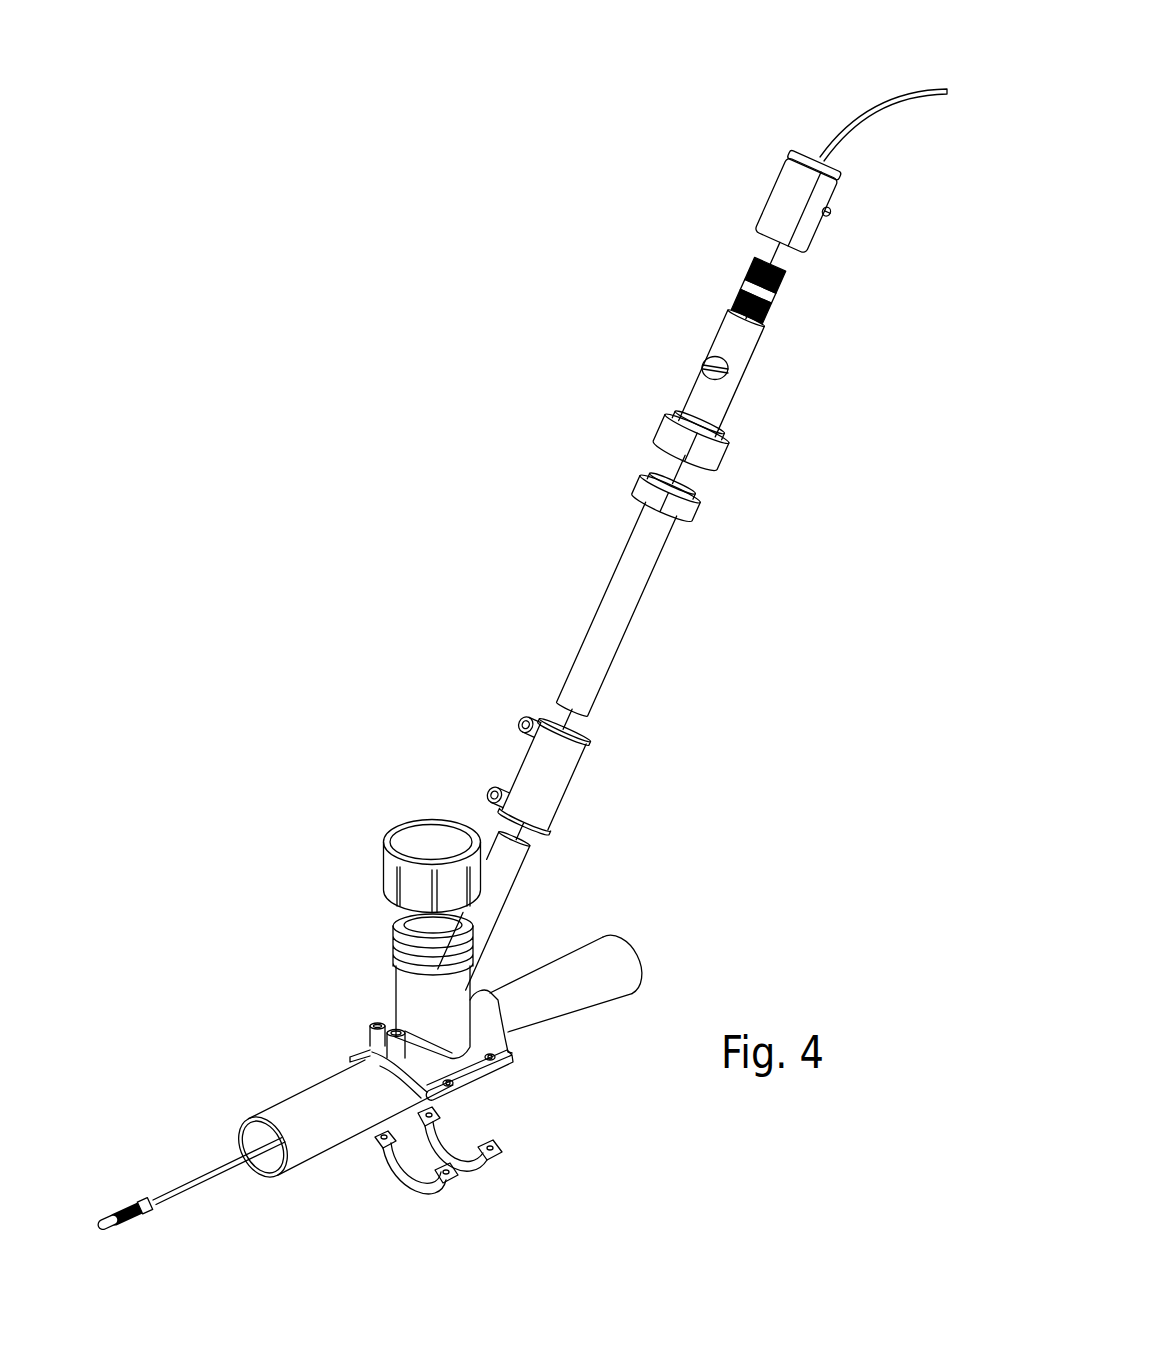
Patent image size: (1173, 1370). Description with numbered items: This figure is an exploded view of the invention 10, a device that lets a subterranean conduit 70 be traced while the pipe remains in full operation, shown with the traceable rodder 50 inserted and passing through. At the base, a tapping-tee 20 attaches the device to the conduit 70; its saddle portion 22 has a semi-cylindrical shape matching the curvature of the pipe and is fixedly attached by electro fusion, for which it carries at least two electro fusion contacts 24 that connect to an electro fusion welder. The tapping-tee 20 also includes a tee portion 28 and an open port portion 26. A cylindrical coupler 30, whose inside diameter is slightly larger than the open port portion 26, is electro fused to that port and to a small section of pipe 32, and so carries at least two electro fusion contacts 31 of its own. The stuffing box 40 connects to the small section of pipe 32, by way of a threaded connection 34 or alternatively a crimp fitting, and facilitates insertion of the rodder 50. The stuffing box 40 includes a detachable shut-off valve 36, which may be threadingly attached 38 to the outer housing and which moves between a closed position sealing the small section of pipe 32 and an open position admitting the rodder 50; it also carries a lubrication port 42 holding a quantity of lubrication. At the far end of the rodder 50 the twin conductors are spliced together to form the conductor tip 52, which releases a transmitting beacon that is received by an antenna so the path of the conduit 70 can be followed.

The invention 10 is at (388, 403).
The tapping-tee 20 is at (300, 878).
The saddle portion 22 is at (490, 1030).
The electro fusion contacts 24 is at (395, 1053).
The open port portion 26 is at (527, 858).
The tee portion 28 is at (413, 1001).
The coupler 30 is at (565, 773).
The electro fusion contacts 31 is at (519, 727).
The small section of pipe 32 is at (622, 613).
The threaded connection 34 is at (710, 445).
The shut-off valve 36 is at (733, 372).
The threaded attachment 38 is at (763, 293).
The stuffing box 40 is at (805, 233).
The lubrication port 42 is at (830, 203).
The traceable rodder 50 is at (887, 92).
The conductor tip 52 is at (142, 1212).
The conduit 70 is at (615, 962).